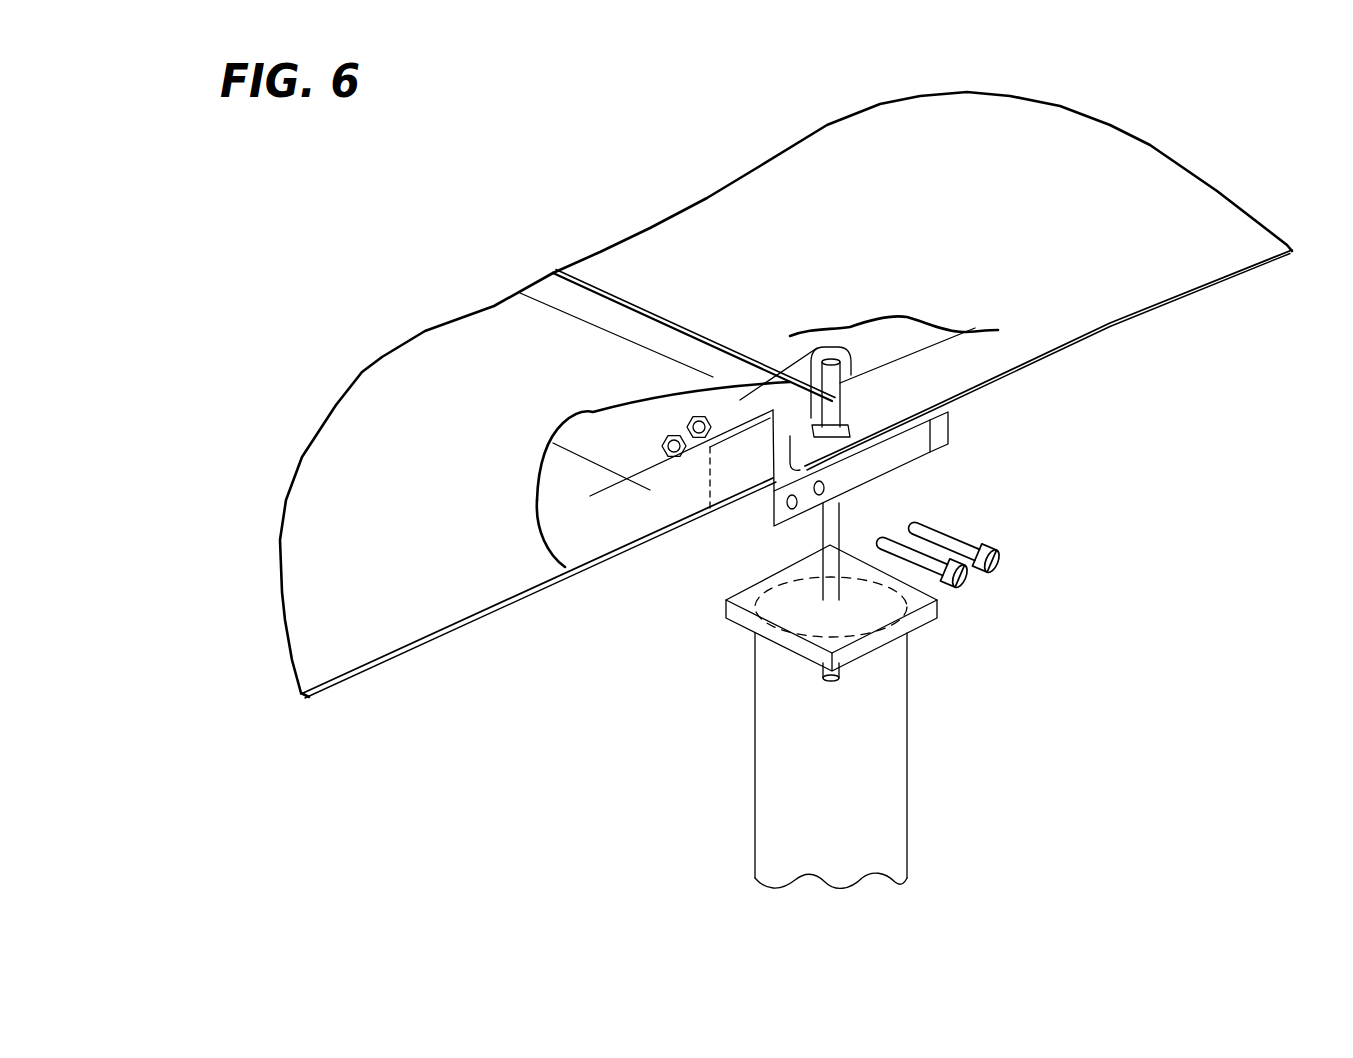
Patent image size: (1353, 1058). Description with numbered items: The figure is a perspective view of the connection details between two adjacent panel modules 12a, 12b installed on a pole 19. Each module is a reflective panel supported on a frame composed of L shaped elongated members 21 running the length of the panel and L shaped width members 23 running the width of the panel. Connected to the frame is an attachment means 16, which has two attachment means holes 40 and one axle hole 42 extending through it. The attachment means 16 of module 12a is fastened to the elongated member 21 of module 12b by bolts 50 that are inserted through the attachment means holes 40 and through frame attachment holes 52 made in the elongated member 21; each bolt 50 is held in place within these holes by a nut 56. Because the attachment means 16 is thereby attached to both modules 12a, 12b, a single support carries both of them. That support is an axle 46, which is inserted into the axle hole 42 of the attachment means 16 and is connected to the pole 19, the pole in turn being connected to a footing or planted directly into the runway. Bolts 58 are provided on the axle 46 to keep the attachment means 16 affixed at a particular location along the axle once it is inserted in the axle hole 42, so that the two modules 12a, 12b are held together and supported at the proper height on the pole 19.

The module 12a is at (1062, 122).
The module 12b is at (403, 457).
The L shaped elongated member 21 is at (622, 522).
The L shaped width member 23 is at (735, 382).
The frame attachment hole 52 is at (773, 410).
The bolt 58 is at (850, 340).
The nut 56 is at (688, 416).
The axle hole 42 is at (905, 433).
The attachment means 16 is at (933, 457).
The attachment means hole 40 is at (845, 506).
The axle 46 is at (813, 548).
The bolt 50 is at (965, 590).
The pole 19 is at (907, 758).